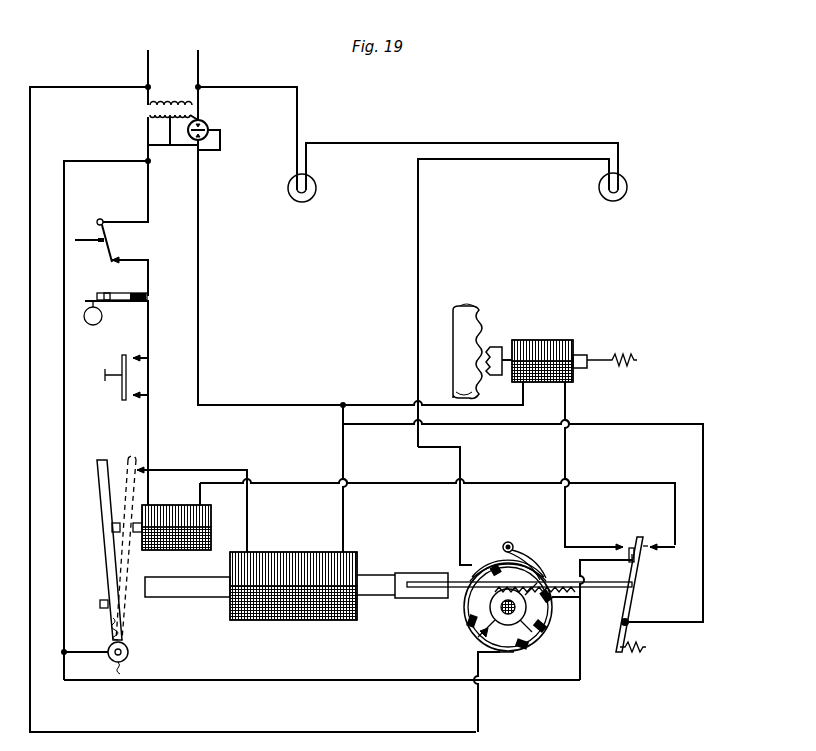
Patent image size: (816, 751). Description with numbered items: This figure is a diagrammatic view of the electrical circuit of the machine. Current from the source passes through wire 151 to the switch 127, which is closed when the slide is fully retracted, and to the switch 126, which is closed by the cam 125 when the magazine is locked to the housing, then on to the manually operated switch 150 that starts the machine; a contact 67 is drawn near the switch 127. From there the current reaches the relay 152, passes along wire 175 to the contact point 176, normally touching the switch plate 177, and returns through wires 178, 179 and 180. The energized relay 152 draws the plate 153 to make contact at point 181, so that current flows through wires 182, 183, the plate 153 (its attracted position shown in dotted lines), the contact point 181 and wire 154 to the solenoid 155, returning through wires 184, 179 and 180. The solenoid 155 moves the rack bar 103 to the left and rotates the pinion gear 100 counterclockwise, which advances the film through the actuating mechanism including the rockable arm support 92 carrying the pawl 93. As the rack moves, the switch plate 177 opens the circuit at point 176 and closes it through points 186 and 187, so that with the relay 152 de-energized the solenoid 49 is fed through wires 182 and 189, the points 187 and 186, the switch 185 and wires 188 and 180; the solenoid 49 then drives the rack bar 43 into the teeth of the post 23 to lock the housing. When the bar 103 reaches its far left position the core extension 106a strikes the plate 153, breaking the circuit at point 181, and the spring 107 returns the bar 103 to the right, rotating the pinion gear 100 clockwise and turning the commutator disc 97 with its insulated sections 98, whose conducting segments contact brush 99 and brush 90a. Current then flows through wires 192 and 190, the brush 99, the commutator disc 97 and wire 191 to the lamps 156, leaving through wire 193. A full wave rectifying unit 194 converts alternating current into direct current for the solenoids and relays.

The wire 192 is at (58, 87).
The wire 193 is at (264, 87).
The full wave rectifying unit 194 is at (192, 120).
The wire 182 is at (94, 161).
The wire 151 is at (150, 178).
The switch 127 is at (96, 224).
The contact 67 is at (86, 246).
The switch 126 is at (121, 294).
The cam 125 is at (92, 326).
The manually operated switch 150 is at (118, 384).
The plate 153 is at (102, 458).
The wire 183 is at (98, 654).
The contact point 181 is at (136, 458).
The wire 154 is at (202, 470).
The relay 152 is at (186, 505).
The wire 175 is at (292, 483).
The solenoid 155 is at (292, 552).
The core extension 106a is at (204, 600).
The rack bar 103 is at (442, 600).
The wire 180 is at (287, 405).
The wire 179 is at (343, 424).
The wire 184 is at (345, 500).
The wire 191 is at (460, 516).
The wire 178 is at (703, 594).
The wire 188 is at (565, 508).
The contact point 186 is at (623, 545).
The switch 185 is at (637, 540).
The contact point 176 is at (650, 548).
The switch plate 177 is at (640, 560).
The contact point 187 is at (606, 620).
The wire 189 is at (392, 680).
The wire 190 is at (478, 706).
The lamps 156 is at (305, 203).
The vertical post 23 is at (456, 308).
The rack bar 43 is at (497, 345).
The solenoid 49 is at (545, 340).
The rockable arm support 92 is at (507, 542).
The pawl 93 is at (540, 548).
The contact 90a is at (494, 566).
The spring 107 is at (560, 585).
The pinion gear 100 is at (480, 632).
The insulated sections 98 is at (556, 597).
The brush 99 is at (518, 650).
The commutator disc 97 is at (544, 628).